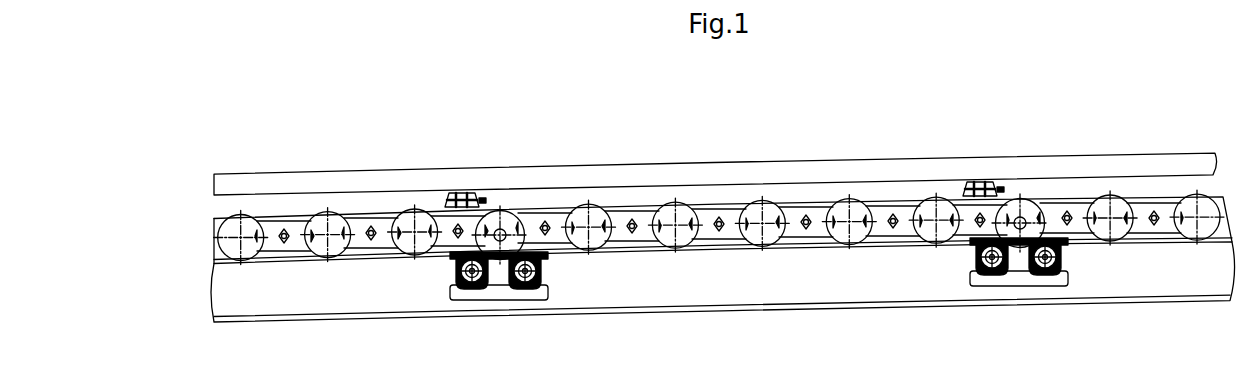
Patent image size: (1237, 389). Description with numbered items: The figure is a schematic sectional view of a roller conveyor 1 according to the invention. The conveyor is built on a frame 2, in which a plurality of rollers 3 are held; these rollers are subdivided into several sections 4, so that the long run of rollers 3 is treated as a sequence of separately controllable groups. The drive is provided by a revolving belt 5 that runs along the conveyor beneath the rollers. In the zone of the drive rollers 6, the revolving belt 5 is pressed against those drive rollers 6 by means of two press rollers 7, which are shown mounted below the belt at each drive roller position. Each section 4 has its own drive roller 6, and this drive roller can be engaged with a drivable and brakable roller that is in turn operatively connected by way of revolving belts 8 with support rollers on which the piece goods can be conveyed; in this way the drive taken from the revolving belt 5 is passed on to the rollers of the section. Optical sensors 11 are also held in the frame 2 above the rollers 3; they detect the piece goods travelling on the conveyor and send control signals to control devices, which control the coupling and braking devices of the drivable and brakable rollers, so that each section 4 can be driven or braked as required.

The roller conveyor 1 is at (573, 167).
The frame 2 is at (358, 214).
The rollers 3 is at (837, 217).
The sections 4 is at (727, 206).
The revolving belt 5 is at (697, 252).
The drive roller 6 is at (511, 224).
The press rollers 7 is at (523, 292).
The revolving belts 8 is at (802, 246).
The optical sensors 11 is at (453, 194).